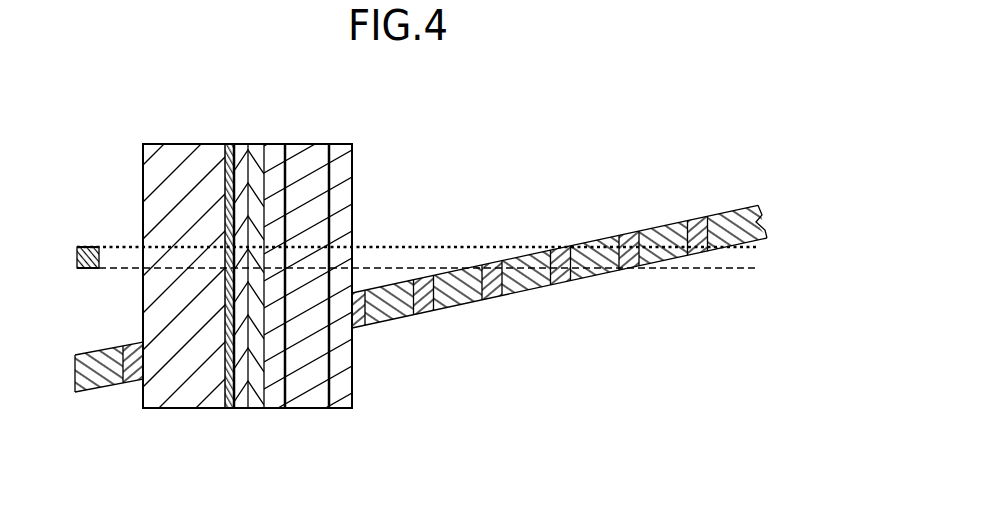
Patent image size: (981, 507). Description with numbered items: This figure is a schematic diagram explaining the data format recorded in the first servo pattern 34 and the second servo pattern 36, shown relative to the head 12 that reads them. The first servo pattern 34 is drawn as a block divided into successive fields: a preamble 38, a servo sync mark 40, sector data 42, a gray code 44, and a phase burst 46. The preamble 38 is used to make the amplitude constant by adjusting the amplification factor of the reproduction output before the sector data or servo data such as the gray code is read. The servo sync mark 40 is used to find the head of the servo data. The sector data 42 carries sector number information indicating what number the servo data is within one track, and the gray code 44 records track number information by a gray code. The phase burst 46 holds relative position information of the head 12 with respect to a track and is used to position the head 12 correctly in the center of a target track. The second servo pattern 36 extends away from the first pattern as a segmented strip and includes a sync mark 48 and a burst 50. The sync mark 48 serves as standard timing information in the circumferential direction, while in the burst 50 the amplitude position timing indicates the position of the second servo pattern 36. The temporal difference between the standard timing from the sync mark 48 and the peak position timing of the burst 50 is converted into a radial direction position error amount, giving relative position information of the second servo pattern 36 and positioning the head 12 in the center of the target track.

The head 12 is at (88, 247).
The first servo pattern 34 is at (230, 277).
The second servo pattern 36 is at (421, 243).
The preamble 38 is at (177, 400).
The servo sync mark 40 is at (227, 400).
The sector data 42 is at (238, 400).
The gray code 44 is at (255, 400).
The phase burst 46 is at (278, 413).
The sync mark 48 is at (562, 266).
The burst 50 is at (651, 266).